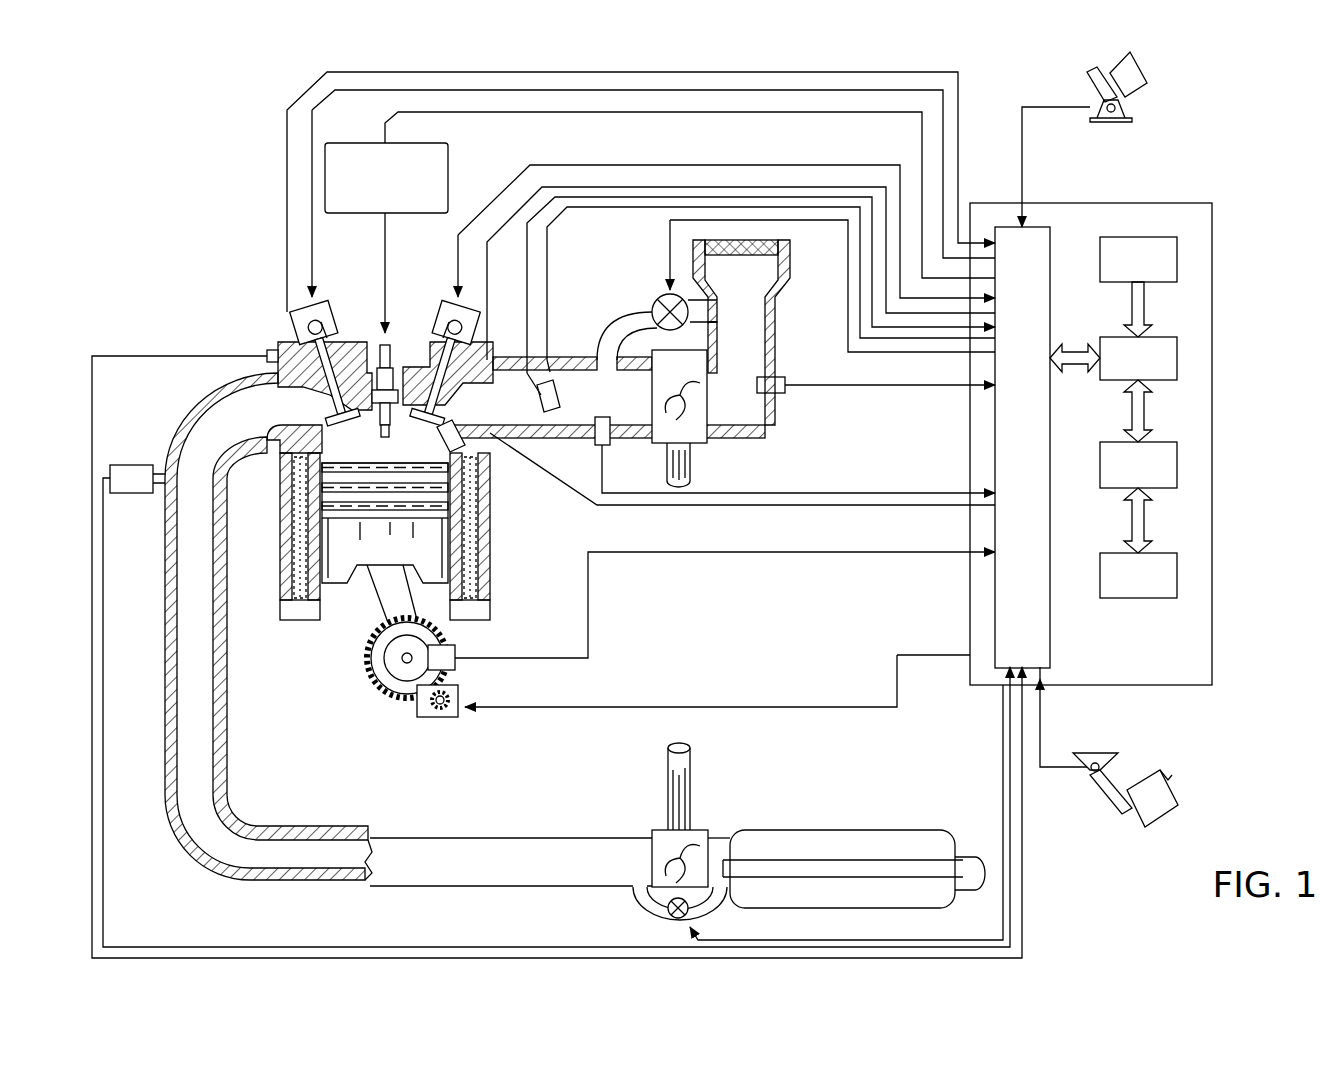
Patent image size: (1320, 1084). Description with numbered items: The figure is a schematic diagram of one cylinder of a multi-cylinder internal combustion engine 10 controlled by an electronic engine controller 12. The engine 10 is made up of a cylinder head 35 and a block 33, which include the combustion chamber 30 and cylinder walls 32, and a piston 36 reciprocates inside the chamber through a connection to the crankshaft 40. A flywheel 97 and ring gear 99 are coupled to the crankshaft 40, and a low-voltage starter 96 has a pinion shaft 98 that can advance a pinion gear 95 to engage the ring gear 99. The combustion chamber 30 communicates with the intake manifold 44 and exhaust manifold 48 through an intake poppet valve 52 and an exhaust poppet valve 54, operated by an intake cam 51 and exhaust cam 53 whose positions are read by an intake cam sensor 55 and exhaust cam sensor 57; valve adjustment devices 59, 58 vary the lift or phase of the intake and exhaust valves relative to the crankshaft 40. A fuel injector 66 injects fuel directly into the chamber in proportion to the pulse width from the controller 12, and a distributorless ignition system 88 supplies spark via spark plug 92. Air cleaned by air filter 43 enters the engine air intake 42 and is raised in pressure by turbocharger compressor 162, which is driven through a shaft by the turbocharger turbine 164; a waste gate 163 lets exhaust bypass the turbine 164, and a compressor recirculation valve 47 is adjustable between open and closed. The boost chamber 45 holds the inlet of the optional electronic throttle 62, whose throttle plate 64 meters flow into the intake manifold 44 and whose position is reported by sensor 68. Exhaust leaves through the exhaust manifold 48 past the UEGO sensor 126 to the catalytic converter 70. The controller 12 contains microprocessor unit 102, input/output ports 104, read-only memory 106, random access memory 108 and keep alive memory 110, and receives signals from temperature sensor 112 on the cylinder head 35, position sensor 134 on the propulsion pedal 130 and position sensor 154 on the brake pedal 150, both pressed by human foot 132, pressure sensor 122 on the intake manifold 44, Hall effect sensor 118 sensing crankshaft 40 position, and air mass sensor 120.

The internal combustion engine 10 is at (205, 290).
The electronic engine controller 12 is at (1212, 203).
The combustion chamber 30 is at (383, 443).
The cylinder walls 32 is at (322, 592).
The block 33 is at (361, 553).
The cylinder head 35 is at (270, 333).
The piston 36 is at (367, 550).
The crankshaft 40 is at (384, 640).
The engine air intake 42 is at (613, 262).
The air filter 43 is at (762, 258).
The intake manifold 44 is at (493, 410).
The boost chamber 45 is at (598, 410).
The compressor recirculation valve 47 is at (660, 295).
The exhaust manifold 48 is at (233, 417).
The intake cam 51 is at (443, 334).
The intake poppet valve 52 is at (458, 406).
The exhaust cam 53 is at (314, 322).
The exhaust poppet valve 54 is at (342, 417).
The intake cam sensor 55 is at (458, 343).
The exhaust cam sensor 57 is at (306, 348).
The valve adjustment device 58 is at (328, 324).
The valve adjustment device 59 is at (456, 322).
The electronic throttle 62 is at (557, 400).
The throttle plate 64 is at (548, 412).
The fuel injector 66 is at (716, 462).
The throttle position sensor 68 is at (515, 372).
The catalytic converter 70 is at (772, 830).
The distributorless ignition system 88 is at (342, 142).
The spark plug 92 is at (383, 344).
The pinion gear 95 is at (442, 716).
The starter 96 is at (675, 711).
The flywheel 97 is at (368, 670).
The pinion shaft 98 is at (431, 715).
The ring gear 99 is at (396, 700).
The microprocessor unit 102 is at (1177, 365).
The input/output ports 104 is at (1050, 242).
The read-only memory 106 is at (1177, 270).
The random access memory 108 is at (1177, 475).
The keep alive memory 110 is at (1177, 585).
The temperature sensor 112 is at (265, 354).
The Hall effect sensor 118 is at (455, 648).
The air mass sensor 120 is at (787, 377).
The pressure sensor 122 is at (597, 445).
The Universal Exhaust Gas Oxygen sensor 126 is at (132, 465).
The propulsion pedal 130 is at (1136, 81).
The human foot 132 is at (1147, 70).
The position sensor 134 is at (1132, 107).
The brake pedal 150 is at (1086, 755).
The position sensor 154 is at (1090, 757).
The turbocharger compressor 162 is at (700, 430).
The waste gate 163 is at (672, 918).
The turbocharger turbine 164 is at (660, 830).